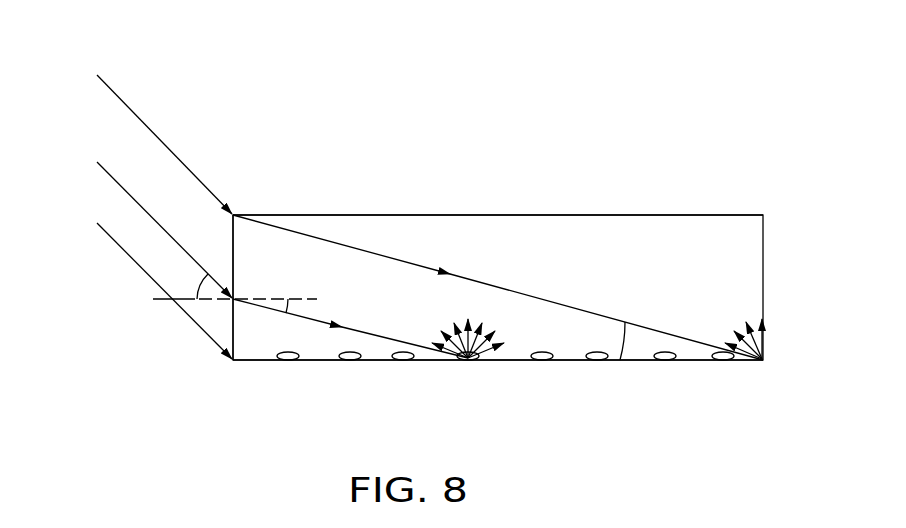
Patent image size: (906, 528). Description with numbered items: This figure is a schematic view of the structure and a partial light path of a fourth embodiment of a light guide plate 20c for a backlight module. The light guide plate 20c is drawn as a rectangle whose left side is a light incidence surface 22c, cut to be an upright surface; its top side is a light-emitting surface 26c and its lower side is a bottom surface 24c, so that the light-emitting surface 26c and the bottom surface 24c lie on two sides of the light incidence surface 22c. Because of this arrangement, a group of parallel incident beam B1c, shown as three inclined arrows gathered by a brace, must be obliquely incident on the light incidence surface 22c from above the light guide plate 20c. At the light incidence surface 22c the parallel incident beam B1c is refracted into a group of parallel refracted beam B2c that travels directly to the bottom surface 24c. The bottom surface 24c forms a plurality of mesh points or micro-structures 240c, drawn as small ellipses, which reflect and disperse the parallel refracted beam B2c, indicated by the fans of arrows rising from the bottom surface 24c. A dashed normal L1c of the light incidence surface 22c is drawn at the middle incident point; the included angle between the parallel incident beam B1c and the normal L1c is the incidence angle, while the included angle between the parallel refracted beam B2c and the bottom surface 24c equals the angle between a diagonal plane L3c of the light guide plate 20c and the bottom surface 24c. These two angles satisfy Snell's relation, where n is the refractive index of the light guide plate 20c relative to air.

The light guide plate 20c is at (658, 255).
The light incidence surface 22c is at (233, 250).
The bottom surface 24c is at (258, 360).
The light-emitting surface 26c is at (428, 215).
The micro-structures 240c is at (542, 360).
The parallel incident beam B1c is at (83, 70).
The parallel refracted beam B2c is at (366, 307).
The normal of the light incidence surface L1c is at (216, 298).
The diagonal plane of the light guide plate L3c is at (527, 295).